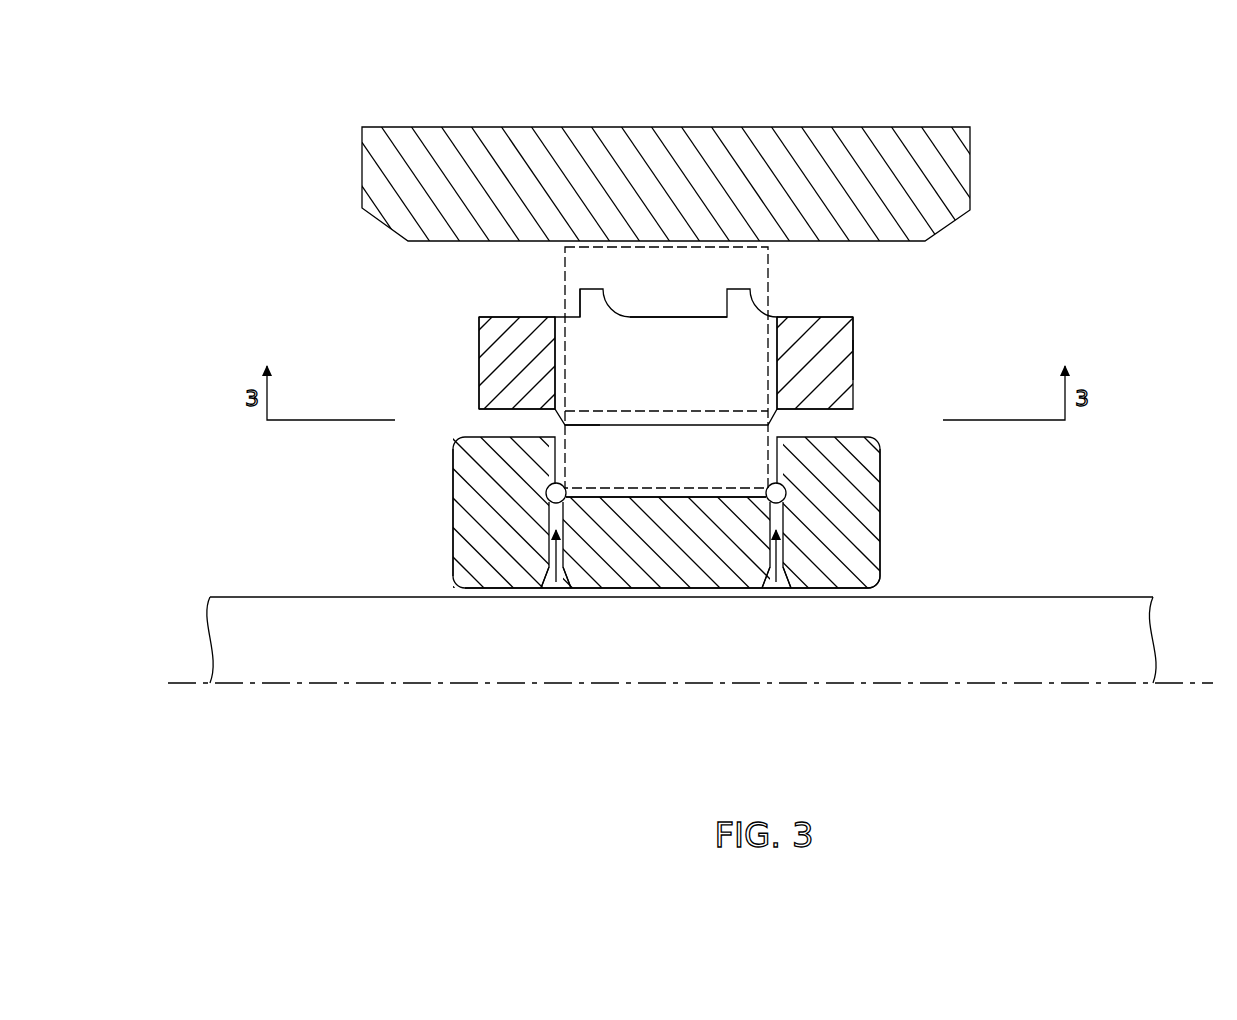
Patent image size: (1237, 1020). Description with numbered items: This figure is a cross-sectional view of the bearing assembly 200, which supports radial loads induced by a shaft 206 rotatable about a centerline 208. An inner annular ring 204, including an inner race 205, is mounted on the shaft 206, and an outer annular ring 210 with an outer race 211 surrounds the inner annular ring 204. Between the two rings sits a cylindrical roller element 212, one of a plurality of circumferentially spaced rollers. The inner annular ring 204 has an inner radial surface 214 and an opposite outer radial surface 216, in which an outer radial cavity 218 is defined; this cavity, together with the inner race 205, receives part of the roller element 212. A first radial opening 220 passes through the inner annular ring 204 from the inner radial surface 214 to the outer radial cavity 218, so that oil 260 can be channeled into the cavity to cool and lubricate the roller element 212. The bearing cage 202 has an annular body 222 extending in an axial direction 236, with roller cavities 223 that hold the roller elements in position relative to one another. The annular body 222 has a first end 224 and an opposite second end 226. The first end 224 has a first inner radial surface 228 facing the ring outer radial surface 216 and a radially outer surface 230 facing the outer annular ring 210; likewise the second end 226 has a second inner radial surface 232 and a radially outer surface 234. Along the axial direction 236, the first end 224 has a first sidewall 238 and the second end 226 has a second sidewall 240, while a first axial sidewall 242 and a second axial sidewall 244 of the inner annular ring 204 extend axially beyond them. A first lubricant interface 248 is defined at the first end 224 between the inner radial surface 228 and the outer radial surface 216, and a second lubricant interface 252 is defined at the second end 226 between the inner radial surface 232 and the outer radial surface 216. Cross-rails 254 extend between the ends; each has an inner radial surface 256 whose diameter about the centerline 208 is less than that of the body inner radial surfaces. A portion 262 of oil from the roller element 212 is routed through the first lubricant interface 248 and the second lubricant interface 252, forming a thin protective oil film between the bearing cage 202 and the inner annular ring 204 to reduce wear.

The bearing assembly 200 is at (975, 92).
The bearing cage 202 is at (693, 317).
The inner annular ring 204 is at (880, 540).
The inner race 205 is at (677, 497).
The shaft 206 is at (1093, 597).
The centerline 208 is at (1195, 683).
The outer annular ring 210 is at (485, 127).
The outer race 211 is at (623, 241).
The roller element 212 is at (770, 270).
The inner radial surface 214 is at (665, 590).
The outer radial surface 216 is at (880, 497).
The outer radial cavity 218 is at (657, 455).
The first radial opening 220 is at (548, 542).
The annular body 222 is at (853, 330).
The roller cavity 223 is at (588, 315).
The first end 224 is at (455, 310).
The second end 226 is at (879, 309).
The first inner radial surface 228 is at (506, 409).
The radially outer surface 230 is at (502, 317).
The second inner radial surface 232 is at (836, 409).
The radially outer surface 234 is at (833, 316).
The axial direction 236 is at (577, 773).
The first sidewall 238 is at (479, 338).
The second sidewall 240 is at (853, 357).
The first axial sidewall 242 is at (453, 550).
The second axial sidewall 244 is at (880, 573).
The first lubricant interface 248 is at (466, 425).
The second lubricant interface 252 is at (865, 425).
The cross-rail 254 is at (692, 409).
The inner radial surface 256 is at (590, 425).
The oil 260 is at (556, 580).
The oil flow 262 is at (548, 427).